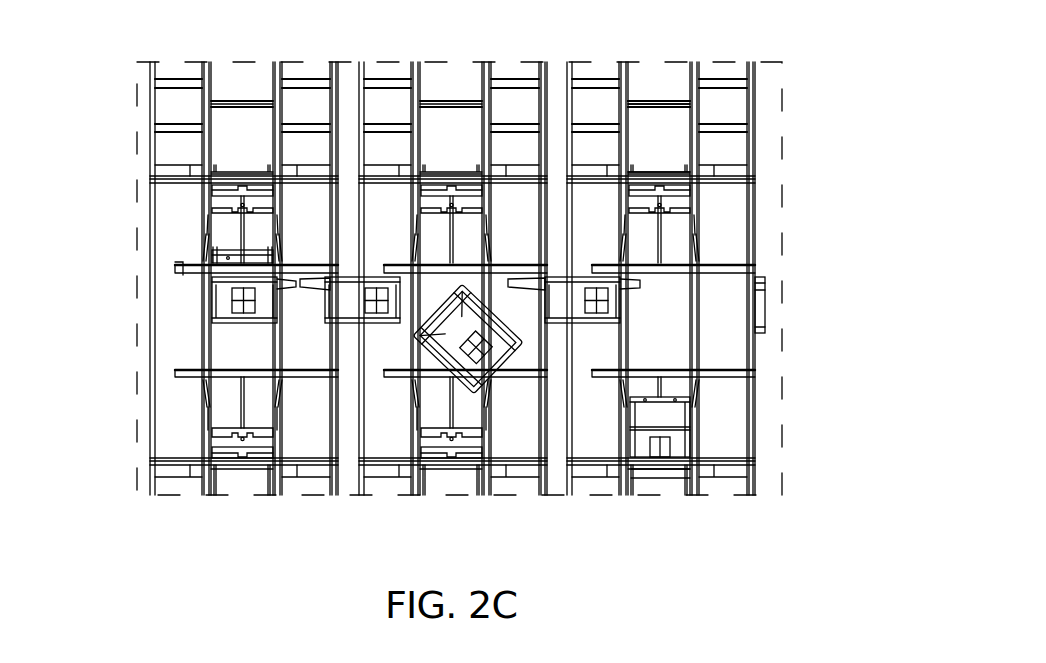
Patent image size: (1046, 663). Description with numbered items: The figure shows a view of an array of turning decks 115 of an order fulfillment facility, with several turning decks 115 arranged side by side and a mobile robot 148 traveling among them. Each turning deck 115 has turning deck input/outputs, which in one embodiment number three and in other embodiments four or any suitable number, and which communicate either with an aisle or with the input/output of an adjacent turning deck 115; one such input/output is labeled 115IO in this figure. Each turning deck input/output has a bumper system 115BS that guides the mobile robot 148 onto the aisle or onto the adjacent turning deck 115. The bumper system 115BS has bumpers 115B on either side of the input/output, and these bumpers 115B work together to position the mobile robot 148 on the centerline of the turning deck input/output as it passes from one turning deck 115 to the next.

The mobile robot 148 is at (190, 289).
The turning deck 115 is at (678, 247).
The bumper 115B is at (202, 388).
The bumper system 115BS is at (222, 438).
The input/output station 115IO is at (663, 134).